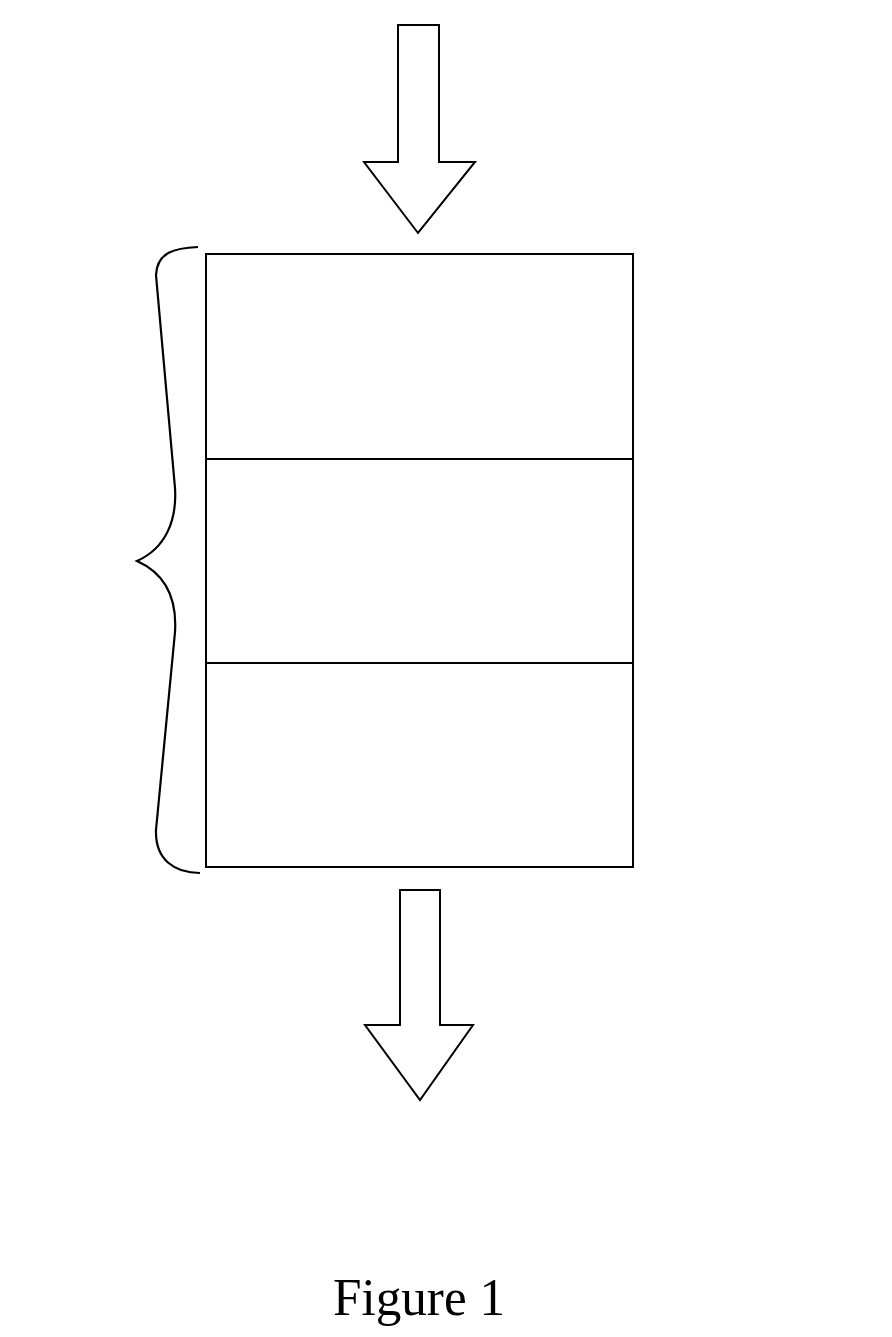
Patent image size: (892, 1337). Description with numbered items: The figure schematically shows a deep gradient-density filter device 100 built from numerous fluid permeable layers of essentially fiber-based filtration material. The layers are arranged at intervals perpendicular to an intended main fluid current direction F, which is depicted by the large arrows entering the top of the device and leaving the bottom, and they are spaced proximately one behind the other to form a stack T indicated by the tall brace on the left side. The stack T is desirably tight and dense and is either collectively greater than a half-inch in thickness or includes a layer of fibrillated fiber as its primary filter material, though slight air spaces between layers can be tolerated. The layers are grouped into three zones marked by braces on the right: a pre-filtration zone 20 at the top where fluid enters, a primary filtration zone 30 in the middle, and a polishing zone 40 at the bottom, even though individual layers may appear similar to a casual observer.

The deep gradient-density filter device 100 is at (636, 142).
The pre-filtration zone 20 is at (647, 255).
The primary filtration zone 30 is at (647, 462).
The polishing zone 40 is at (647, 666).
The stack T is at (138, 560).
The intended main fluid current direction F is at (427, 110).